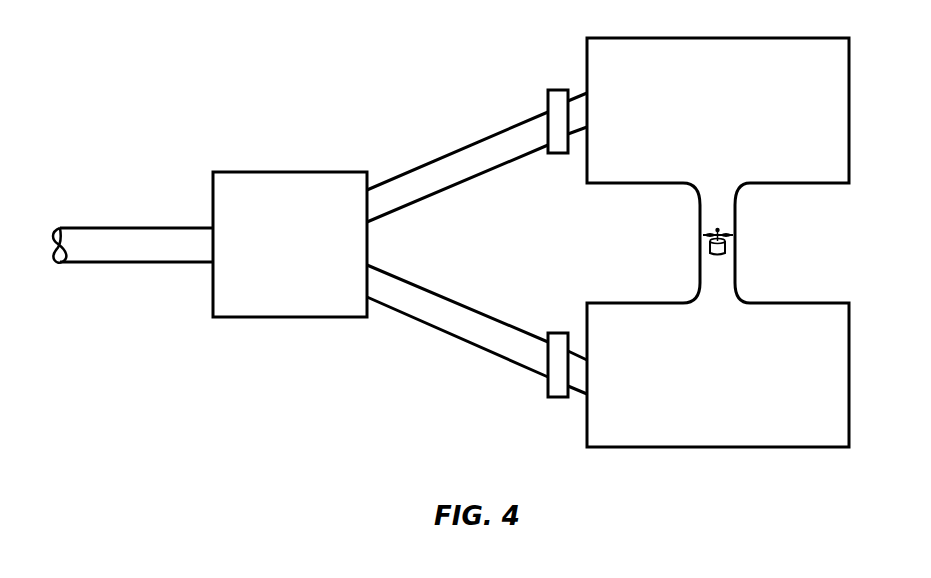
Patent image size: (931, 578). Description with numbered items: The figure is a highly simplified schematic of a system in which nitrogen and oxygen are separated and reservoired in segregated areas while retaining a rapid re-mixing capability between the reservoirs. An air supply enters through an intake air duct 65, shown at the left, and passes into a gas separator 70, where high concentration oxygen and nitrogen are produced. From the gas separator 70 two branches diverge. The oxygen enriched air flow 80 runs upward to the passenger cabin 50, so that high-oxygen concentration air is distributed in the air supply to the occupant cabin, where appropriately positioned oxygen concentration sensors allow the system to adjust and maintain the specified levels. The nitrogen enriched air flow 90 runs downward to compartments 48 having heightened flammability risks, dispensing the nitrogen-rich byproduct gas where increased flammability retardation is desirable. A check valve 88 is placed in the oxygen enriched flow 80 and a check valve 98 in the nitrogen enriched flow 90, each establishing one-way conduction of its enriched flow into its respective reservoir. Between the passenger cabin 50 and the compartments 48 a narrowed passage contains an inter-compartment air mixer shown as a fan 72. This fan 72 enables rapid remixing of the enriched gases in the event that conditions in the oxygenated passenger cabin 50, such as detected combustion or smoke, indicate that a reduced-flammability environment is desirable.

The intake air duct 65 is at (153, 256).
The gas separator 70 is at (302, 256).
The oxygen enriched air flow 80 is at (467, 153).
The check valve 88 is at (558, 90).
The passenger cabin 50 is at (731, 123).
The compartments 48 is at (731, 388).
The fan 72 is at (741, 239).
The nitrogen enriched air flow 90 is at (468, 332).
The check valve 98 is at (557, 400).